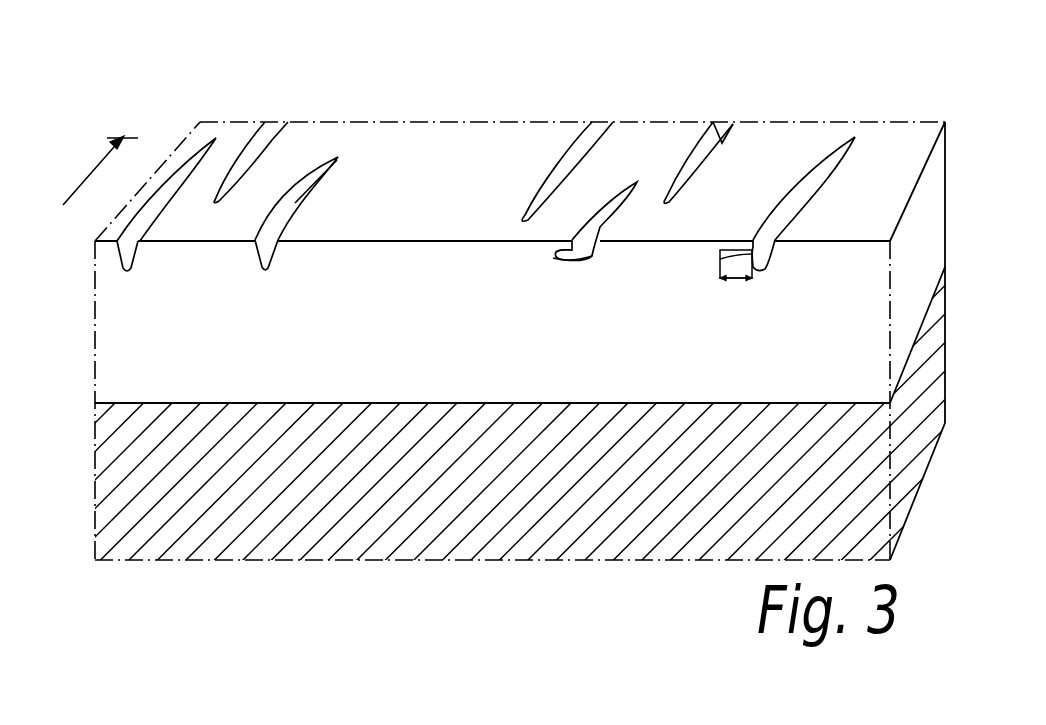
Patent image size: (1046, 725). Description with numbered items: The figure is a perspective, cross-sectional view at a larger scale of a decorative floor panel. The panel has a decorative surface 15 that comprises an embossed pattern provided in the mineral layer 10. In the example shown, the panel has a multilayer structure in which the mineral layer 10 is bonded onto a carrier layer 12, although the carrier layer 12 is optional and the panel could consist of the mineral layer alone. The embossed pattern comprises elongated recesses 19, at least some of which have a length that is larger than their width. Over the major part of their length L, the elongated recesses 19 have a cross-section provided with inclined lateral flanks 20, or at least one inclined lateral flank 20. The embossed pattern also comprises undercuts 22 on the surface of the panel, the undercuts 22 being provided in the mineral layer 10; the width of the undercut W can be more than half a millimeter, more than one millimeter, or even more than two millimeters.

The mineral layer 10 is at (415, 353).
The carrier layer 12 is at (523, 487).
The decorative surface 15 is at (884, 118).
The elongated recesses 19 is at (172, 187).
The inclined lateral flank 20 is at (295, 203).
The undercuts 22 is at (575, 255).
The width of the undercut W is at (735, 296).
The length L is at (96, 170).